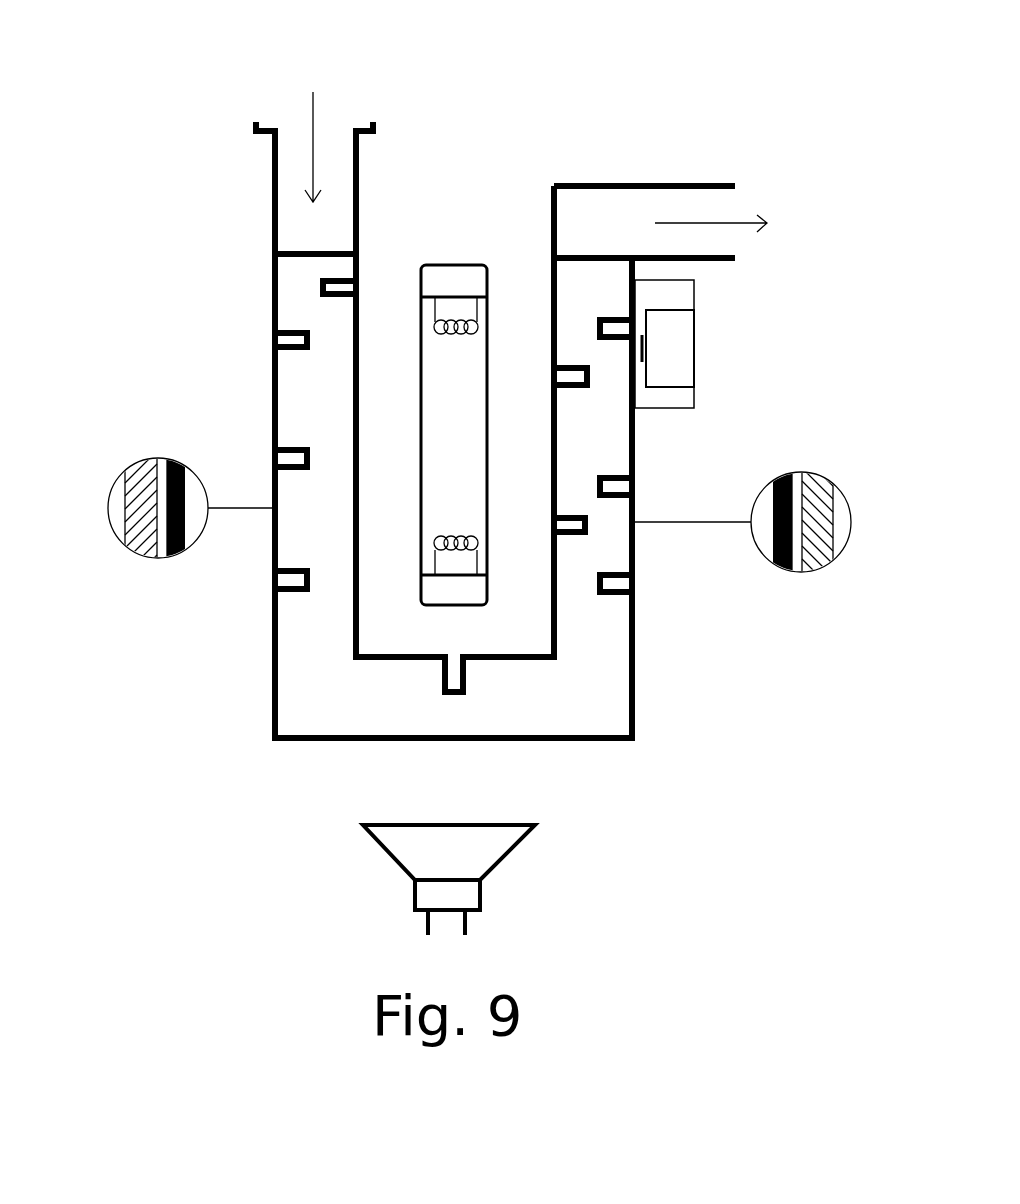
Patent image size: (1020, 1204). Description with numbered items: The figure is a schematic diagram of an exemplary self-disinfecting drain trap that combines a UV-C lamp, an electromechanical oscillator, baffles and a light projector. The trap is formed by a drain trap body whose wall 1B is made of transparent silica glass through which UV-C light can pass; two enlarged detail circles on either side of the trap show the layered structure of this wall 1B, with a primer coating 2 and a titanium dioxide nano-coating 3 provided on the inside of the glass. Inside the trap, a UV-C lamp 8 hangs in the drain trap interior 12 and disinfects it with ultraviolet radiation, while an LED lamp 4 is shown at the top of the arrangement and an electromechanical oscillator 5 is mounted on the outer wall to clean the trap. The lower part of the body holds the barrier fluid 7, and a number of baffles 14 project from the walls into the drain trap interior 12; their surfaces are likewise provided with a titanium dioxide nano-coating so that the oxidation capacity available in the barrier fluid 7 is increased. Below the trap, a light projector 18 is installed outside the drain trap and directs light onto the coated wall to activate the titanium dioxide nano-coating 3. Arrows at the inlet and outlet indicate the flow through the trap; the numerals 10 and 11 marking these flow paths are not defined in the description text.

The wall of the drain trap body made of transparent glass 1B is at (138, 508).
The primer coating 2 is at (163, 487).
The titanium dioxide nano-coating 3 is at (167, 560).
The LED lamp 4 is at (263, 172).
The electromechanical oscillator 5 is at (678, 352).
The barrier fluid 7 is at (337, 685).
The UV-C lamp 8 is at (443, 443).
The inlet air flow 10 is at (305, 170).
The air outlet 11 is at (600, 243).
The drain trap interior 12 is at (333, 378).
The baffles 14 is at (275, 592).
The light projector 18 is at (447, 853).